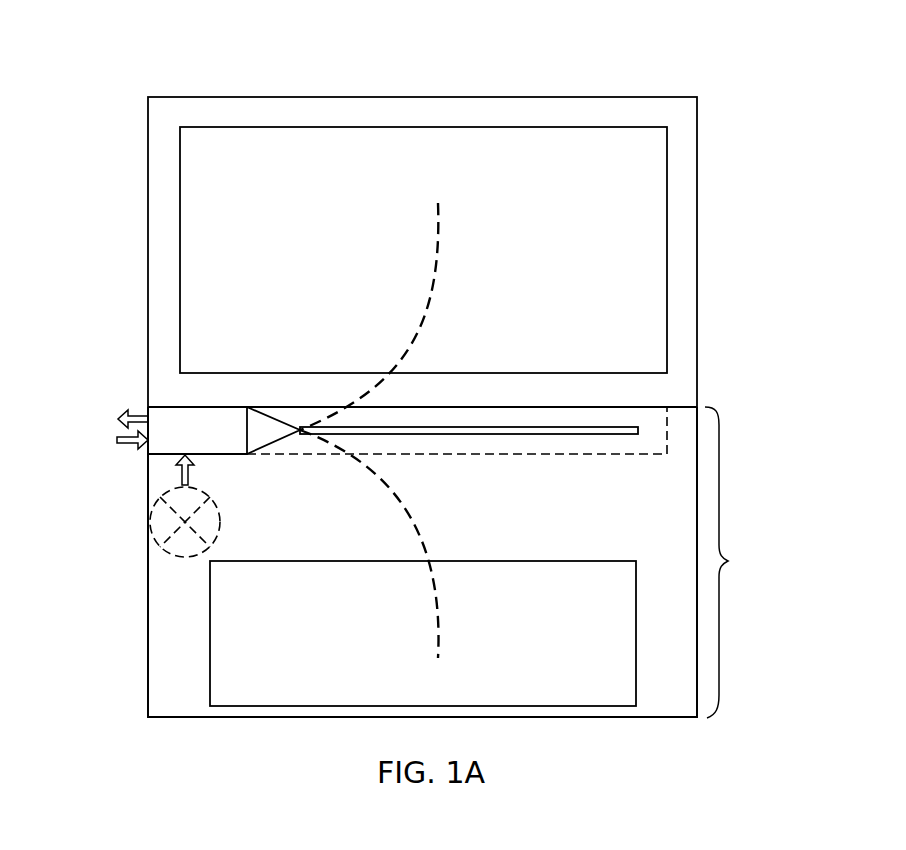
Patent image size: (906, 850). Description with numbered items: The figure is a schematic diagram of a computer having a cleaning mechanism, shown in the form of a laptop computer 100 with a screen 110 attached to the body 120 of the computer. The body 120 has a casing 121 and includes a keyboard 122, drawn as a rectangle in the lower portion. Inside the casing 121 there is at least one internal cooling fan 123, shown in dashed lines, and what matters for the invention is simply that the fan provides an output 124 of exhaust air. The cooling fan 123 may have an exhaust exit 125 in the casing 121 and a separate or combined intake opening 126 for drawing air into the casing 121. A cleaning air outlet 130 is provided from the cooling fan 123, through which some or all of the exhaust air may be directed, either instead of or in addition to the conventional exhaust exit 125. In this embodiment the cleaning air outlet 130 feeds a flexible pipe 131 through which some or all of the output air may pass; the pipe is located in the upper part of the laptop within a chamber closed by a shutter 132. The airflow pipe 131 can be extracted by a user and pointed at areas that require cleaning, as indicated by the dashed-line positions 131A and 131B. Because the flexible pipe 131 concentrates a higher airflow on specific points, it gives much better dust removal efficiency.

The laptop computer 100 is at (130, 49).
The screen 110 is at (192, 249).
The body 120 is at (733, 561).
The casing 121 is at (154, 626).
The keyboard 122 is at (214, 669).
The cooling fan 123 is at (178, 548).
The output 124 is at (181, 477).
The exhaust exit 125 is at (117, 440).
The intake opening 126 is at (120, 416).
The cleaning air outlet 130 is at (273, 427).
The flexible pipe 131 is at (625, 428).
The extracted pipe position 131A is at (441, 238).
The extracted pipe position 131B is at (443, 621).
The shutter 132 is at (660, 443).